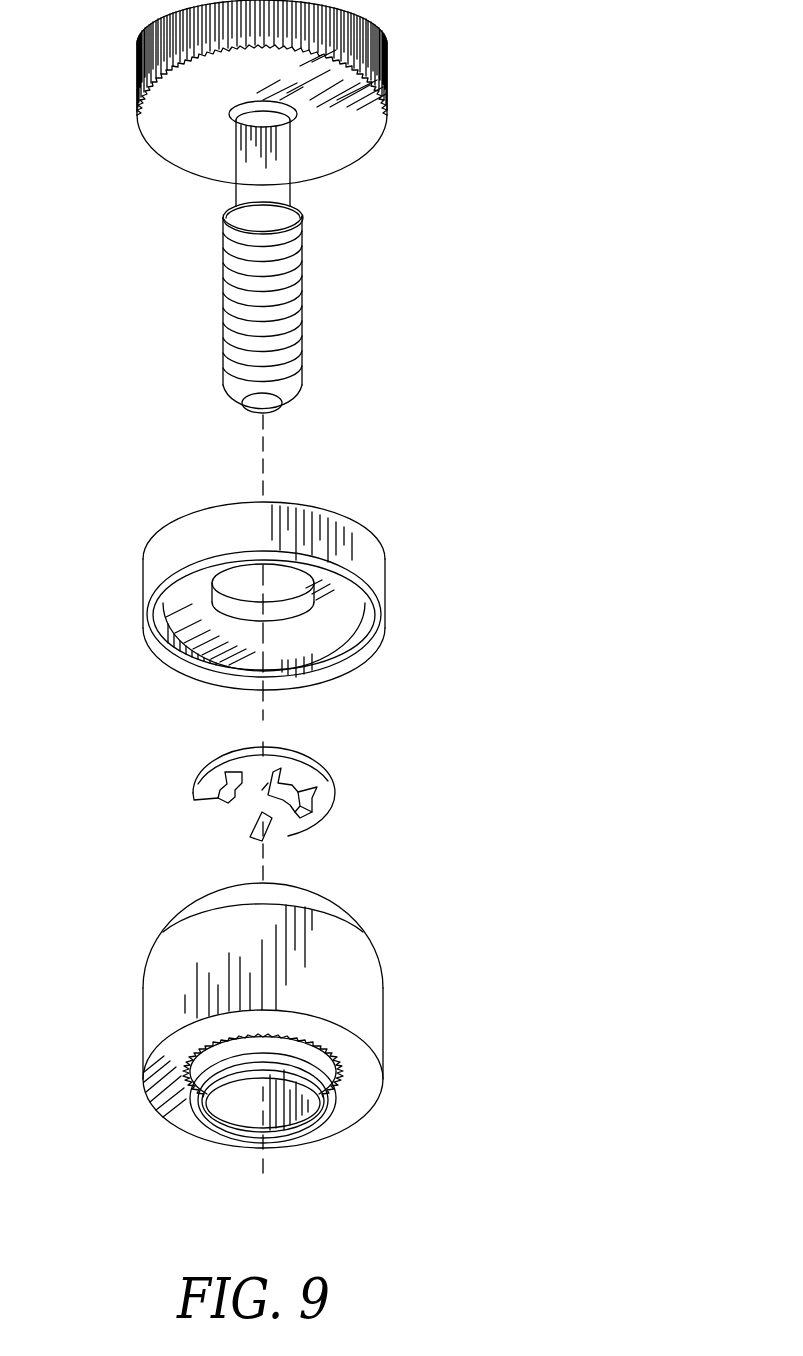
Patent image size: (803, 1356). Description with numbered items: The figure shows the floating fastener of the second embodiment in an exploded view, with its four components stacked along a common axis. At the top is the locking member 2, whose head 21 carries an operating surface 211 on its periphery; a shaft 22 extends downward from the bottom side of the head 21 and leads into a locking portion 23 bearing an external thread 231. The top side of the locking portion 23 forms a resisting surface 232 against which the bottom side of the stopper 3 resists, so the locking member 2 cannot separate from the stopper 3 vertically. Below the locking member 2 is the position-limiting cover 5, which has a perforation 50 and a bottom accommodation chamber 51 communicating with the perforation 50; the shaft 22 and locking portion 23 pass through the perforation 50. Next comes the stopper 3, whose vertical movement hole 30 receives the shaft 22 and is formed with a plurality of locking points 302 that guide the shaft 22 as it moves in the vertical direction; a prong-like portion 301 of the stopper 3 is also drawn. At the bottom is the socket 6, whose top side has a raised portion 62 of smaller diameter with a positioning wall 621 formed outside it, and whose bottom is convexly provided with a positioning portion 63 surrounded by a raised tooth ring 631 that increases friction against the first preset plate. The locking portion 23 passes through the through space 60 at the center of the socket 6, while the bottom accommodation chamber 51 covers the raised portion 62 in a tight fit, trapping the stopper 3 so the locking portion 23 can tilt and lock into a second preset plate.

The locking member 2 is at (105, 105).
The head 21 is at (362, 128).
The operating surface 211 is at (363, 50).
The shaft 22 is at (245, 196).
The locking portion 23 is at (385, 305).
The external thread 231 is at (283, 312).
The resisting surface 232 is at (288, 207).
The position-limiting cover 5 is at (417, 590).
The perforation 50 is at (233, 613).
The bottom accommodation chamber 51 is at (331, 656).
The stopper 3 is at (183, 762).
The vertical movement hole 30 is at (277, 804).
The prong 301 is at (220, 819).
The locking points 302 is at (218, 798).
The socket 6 is at (417, 1006).
The raised portion 62 is at (442, 898).
The positioning wall 621 is at (342, 913).
The positioning portion 63 is at (330, 1112).
The raised tooth ring 631 is at (340, 1069).
The through space 60 is at (222, 1106).